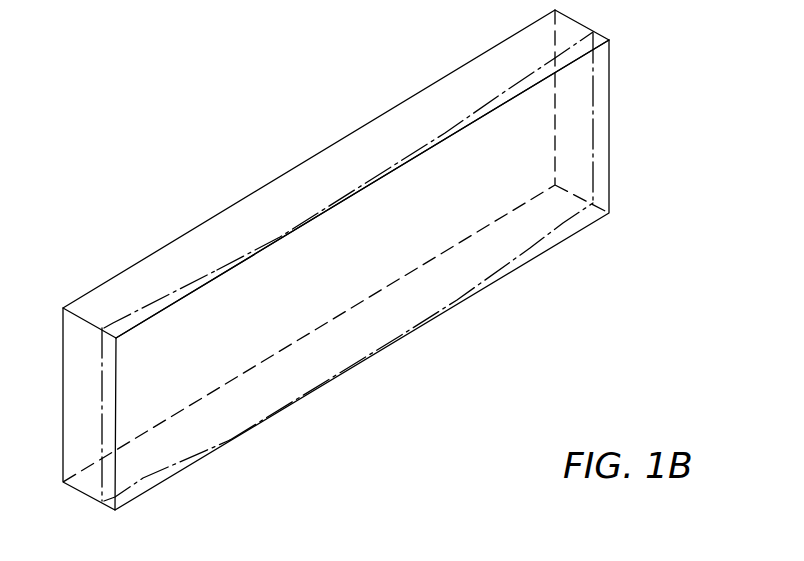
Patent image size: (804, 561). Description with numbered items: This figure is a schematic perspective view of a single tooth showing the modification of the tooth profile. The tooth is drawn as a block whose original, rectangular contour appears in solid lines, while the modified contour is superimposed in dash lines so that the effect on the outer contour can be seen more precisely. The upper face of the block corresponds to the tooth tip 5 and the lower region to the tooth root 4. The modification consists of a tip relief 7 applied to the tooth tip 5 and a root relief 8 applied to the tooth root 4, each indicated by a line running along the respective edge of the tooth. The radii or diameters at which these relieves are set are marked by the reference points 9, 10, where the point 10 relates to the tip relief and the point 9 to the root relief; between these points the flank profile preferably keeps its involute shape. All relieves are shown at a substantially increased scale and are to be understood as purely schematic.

The tooth root 4 is at (400, 338).
The tooth tip 5 is at (355, 187).
The tip relief 7 is at (140, 485).
The root relief 8 is at (123, 316).
The radius of root relief 9 is at (230, 440).
The radius of tip relief 10 is at (227, 268).